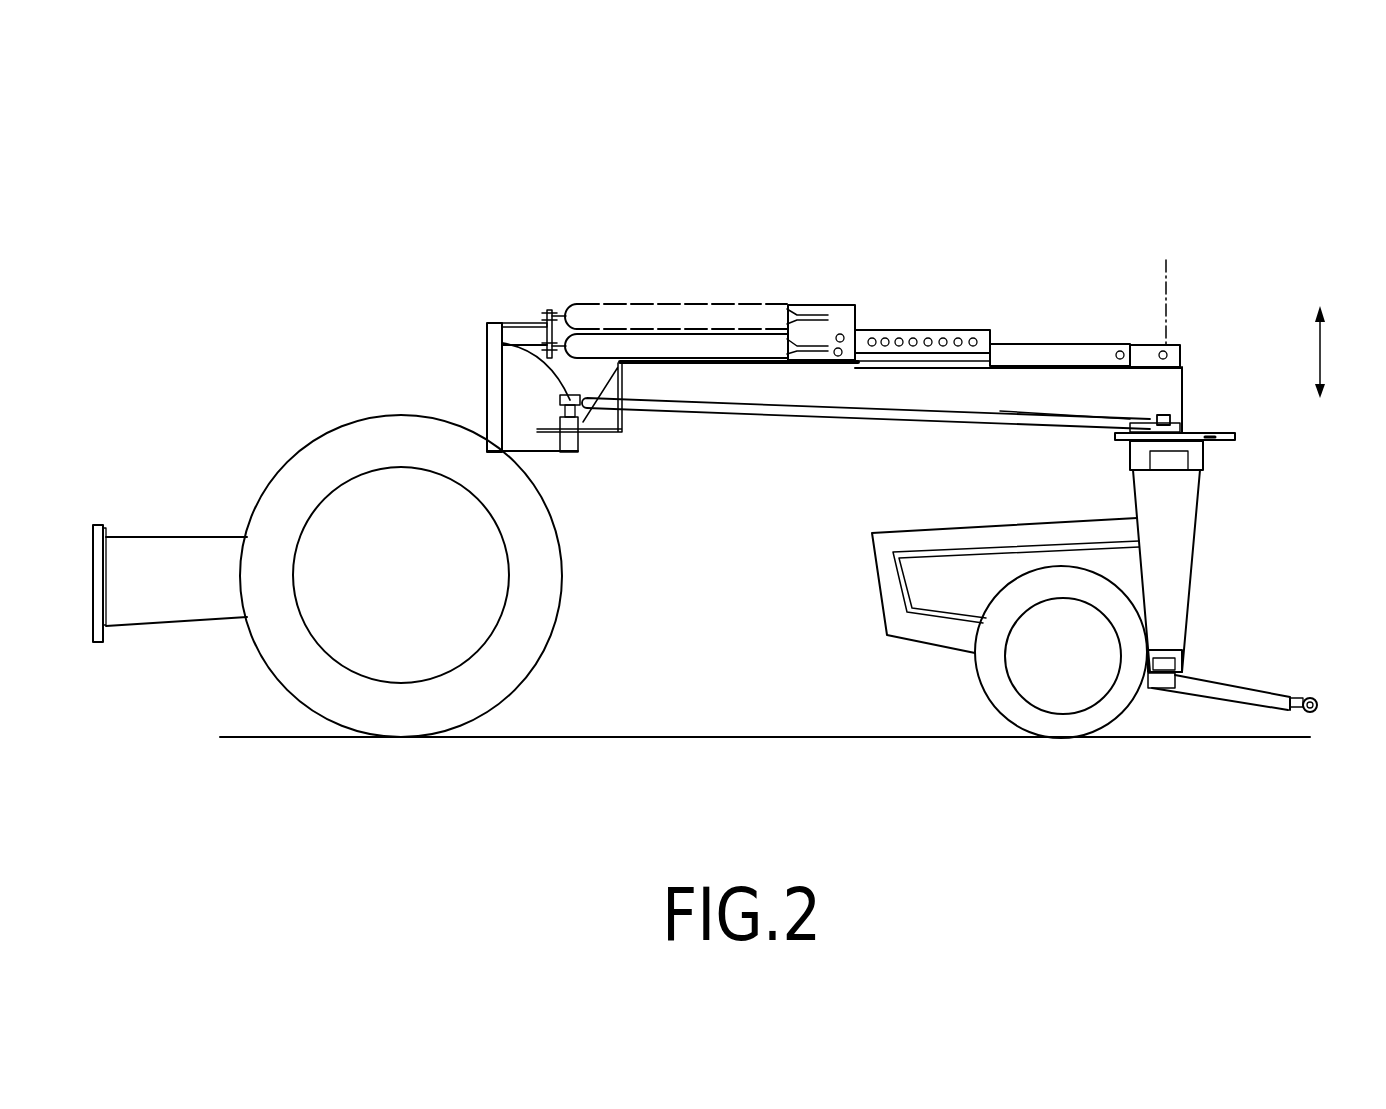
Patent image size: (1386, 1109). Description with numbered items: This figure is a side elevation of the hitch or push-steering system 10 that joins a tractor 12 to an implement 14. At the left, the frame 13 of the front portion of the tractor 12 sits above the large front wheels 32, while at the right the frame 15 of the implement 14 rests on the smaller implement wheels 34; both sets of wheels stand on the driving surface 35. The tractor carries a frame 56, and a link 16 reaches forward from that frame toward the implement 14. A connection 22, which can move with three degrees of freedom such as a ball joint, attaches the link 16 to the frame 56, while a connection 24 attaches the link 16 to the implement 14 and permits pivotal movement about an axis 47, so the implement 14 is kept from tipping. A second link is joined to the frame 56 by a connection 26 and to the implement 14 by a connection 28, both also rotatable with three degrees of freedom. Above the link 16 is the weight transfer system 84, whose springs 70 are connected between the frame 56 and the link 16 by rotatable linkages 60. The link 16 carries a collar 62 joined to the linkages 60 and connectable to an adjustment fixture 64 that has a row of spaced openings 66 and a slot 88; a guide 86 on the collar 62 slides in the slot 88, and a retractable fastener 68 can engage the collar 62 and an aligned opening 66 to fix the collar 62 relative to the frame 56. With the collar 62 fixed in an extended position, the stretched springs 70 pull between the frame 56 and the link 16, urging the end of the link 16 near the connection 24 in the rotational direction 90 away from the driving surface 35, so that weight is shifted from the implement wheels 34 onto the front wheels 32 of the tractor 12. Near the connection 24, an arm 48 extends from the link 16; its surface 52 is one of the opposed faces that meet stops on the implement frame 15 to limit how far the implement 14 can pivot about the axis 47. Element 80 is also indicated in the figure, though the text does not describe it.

The push-steering system 10 is at (822, 180).
The tractor 12 is at (130, 537).
The frame 13 is at (202, 537).
The implement 14 is at (1246, 585).
The frame 15 is at (1203, 462).
The link 16 is at (979, 394).
The connection 22 is at (560, 401).
The connection 24 is at (1182, 367).
The connection 26 is at (487, 346).
The connection 28 is at (1170, 417).
The front wheels 32 is at (543, 628).
The implement wheels 34 is at (1028, 716).
The driving surface 35 is at (763, 739).
The axis 47 is at (1165, 315).
The arm 48 is at (1210, 432).
The surface 52 is at (1237, 436).
The frame 56 is at (487, 323).
The rotatable linkages 60 is at (552, 308).
The collar 62 is at (835, 305).
The adjustment fixture 64 is at (898, 331).
The openings 66 is at (932, 348).
The fastener 68 is at (832, 366).
The springs 70 is at (627, 336).
The lever 80 is at (1062, 393).
The weight transfer system 84 is at (690, 212).
The guide 86 is at (848, 356).
The slot 88 is at (907, 354).
The rotational direction 90 is at (1372, 347).